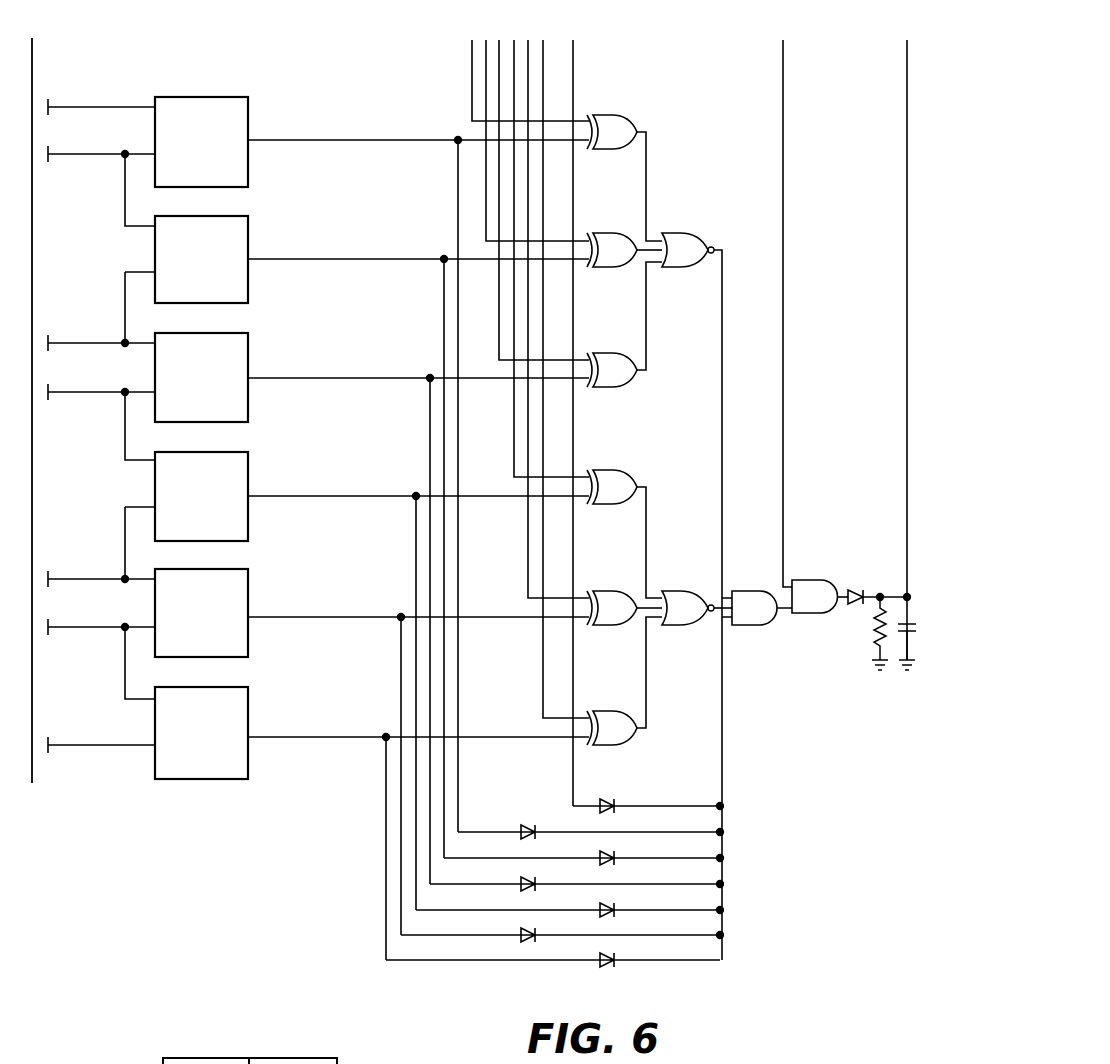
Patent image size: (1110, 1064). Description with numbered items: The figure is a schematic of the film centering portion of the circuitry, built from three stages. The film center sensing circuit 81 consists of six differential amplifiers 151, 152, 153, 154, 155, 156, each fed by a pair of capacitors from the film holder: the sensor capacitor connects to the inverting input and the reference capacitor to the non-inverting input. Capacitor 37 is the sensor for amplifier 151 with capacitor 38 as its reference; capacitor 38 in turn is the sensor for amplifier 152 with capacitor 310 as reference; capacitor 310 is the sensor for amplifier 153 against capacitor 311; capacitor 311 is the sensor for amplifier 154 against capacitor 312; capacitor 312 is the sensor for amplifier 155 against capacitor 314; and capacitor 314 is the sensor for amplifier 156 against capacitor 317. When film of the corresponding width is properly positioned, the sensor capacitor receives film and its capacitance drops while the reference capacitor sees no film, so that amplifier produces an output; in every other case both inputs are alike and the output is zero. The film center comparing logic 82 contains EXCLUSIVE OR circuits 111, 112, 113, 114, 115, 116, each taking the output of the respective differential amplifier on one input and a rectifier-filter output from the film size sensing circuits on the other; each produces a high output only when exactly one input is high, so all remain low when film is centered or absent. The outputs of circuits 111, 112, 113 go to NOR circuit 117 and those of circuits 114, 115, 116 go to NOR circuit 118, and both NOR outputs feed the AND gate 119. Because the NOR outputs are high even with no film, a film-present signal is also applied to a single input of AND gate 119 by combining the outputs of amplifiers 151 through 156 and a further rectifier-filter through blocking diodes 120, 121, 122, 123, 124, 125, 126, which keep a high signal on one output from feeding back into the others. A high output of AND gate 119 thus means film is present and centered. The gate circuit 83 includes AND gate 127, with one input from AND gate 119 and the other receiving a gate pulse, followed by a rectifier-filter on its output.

The capacitor 37 is at (41, 96).
The capacitor 38 is at (42, 158).
The capacitor 310 is at (41, 333).
The capacitor 311 is at (42, 397).
The capacitor 312 is at (41, 569).
The capacitor 314 is at (42, 632).
The capacitor 317 is at (41, 735).
The film center sensing circuit 81 is at (210, 464).
The film center comparing logic 82 is at (689, 520).
The gate circuit 83 is at (844, 580).
The differential amplifier 151 is at (248, 103).
The differential amplifier 152 is at (248, 221).
The differential amplifier 153 is at (248, 339).
The differential amplifier 154 is at (248, 458).
The differential amplifier 155 is at (248, 575).
The differential amplifier 156 is at (248, 693).
The EXCLUSIVE OR circuit 111 is at (620, 118).
The EXCLUSIVE OR circuit 112 is at (612, 235).
The EXCLUSIVE OR circuit 113 is at (613, 352).
The EXCLUSIVE OR circuit 114 is at (612, 470).
The EXCLUSIVE OR circuit 115 is at (612, 585).
The EXCLUSIVE OR circuit 116 is at (612, 708).
The NOR circuit 117 is at (690, 235).
The NOR circuit 118 is at (680, 585).
The AND gate 119 is at (752, 585).
The AND gate 127 is at (810, 578).
The blocking diode 120 is at (608, 800).
The blocking diode 121 is at (520, 823).
The blocking diode 122 is at (608, 856).
The blocking diode 123 is at (522, 880).
The blocking diode 124 is at (608, 906).
The blocking diode 125 is at (522, 930).
The blocking diode 126 is at (605, 966).